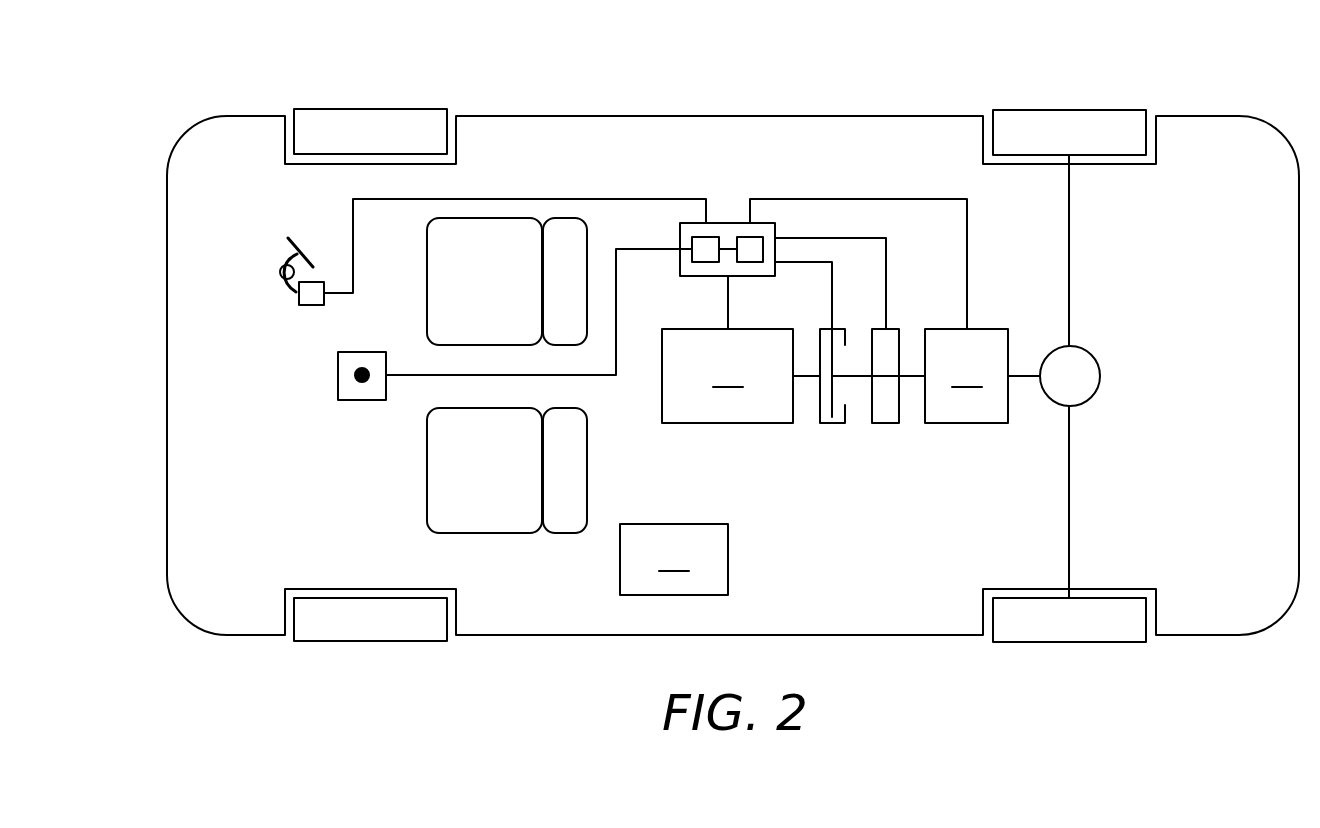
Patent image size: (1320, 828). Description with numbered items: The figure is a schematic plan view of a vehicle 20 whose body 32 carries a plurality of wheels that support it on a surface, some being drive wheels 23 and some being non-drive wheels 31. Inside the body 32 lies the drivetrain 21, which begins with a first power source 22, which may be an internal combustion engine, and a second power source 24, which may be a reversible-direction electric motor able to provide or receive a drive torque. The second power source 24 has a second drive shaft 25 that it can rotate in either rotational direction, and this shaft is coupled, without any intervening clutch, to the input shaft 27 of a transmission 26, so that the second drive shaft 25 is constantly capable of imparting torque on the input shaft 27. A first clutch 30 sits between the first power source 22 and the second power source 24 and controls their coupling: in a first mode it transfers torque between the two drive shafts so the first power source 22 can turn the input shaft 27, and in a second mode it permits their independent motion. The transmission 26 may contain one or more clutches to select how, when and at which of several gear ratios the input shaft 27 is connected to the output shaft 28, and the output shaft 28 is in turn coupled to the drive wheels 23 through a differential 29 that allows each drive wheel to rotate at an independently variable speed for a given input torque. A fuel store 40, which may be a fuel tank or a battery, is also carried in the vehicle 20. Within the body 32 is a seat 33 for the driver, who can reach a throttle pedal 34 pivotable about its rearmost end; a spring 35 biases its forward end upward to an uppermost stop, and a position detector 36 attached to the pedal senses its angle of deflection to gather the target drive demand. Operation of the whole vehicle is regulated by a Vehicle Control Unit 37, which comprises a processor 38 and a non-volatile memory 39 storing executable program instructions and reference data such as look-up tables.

The vehicle 20 is at (828, 69).
The drivetrain 21 is at (800, 454).
The first power source 22 is at (727, 376).
The drive wheels 23 is at (1120, 110).
The second power source 24 is at (886, 424).
The second drive shaft 25 is at (885, 374).
The transmission 26 is at (966, 376).
The input shaft 27 is at (907, 375).
The output shaft 28 is at (1025, 374).
The differential 29 is at (1100, 376).
The first clutch 30 is at (833, 424).
The non-drive wheels 31 is at (423, 109).
The body 32 is at (167, 373).
The seat 33 is at (427, 315).
The throttle pedal 34 is at (290, 252).
The spring 35 is at (281, 274).
The position detector 36 is at (338, 375).
The Vehicle Control Unit 37 is at (727, 223).
The processor 38 is at (706, 262).
The non-volatile memory 39 is at (746, 262).
The fuel store 40 is at (674, 559).